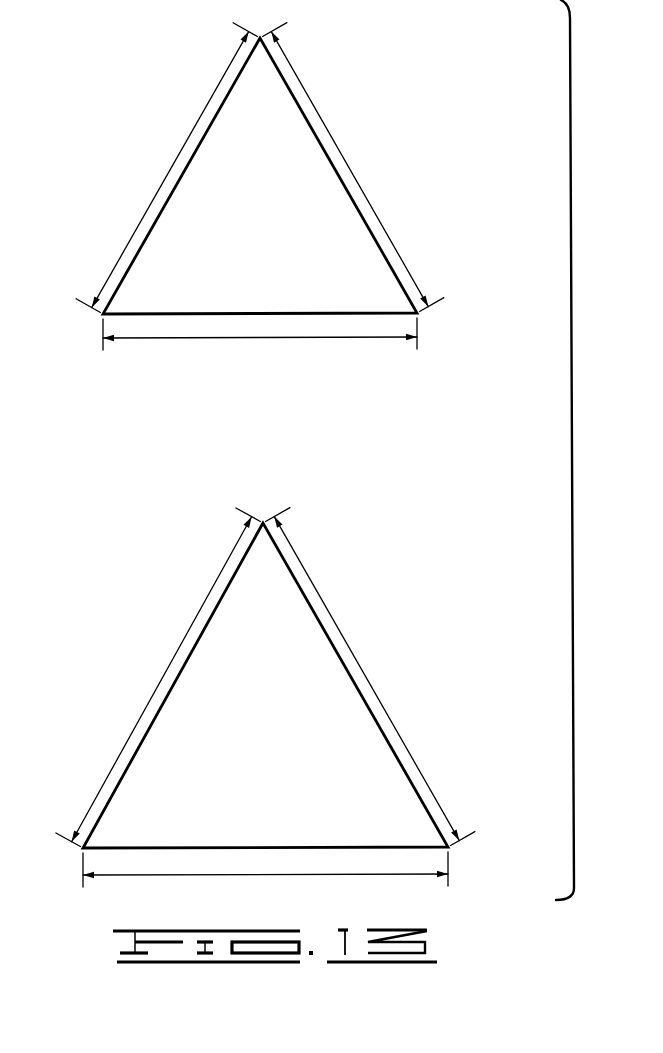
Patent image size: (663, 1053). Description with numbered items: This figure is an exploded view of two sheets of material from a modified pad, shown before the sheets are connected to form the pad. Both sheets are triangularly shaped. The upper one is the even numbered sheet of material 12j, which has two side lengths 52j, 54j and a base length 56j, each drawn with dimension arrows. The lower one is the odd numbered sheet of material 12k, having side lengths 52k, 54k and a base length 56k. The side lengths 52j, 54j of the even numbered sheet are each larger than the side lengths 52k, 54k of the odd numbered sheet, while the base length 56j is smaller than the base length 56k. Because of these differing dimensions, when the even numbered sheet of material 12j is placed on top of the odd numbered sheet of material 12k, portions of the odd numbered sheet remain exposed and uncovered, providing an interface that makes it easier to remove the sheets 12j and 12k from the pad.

The even numbered sheet of material 12j is at (328, 233).
The side length 52j is at (179, 135).
The side length 54j is at (350, 153).
The base length 56j is at (208, 340).
The odd numbered sheet of material 12k is at (325, 690).
The side length 52k is at (183, 622).
The side length 54k is at (345, 618).
The base length 56k is at (190, 877).